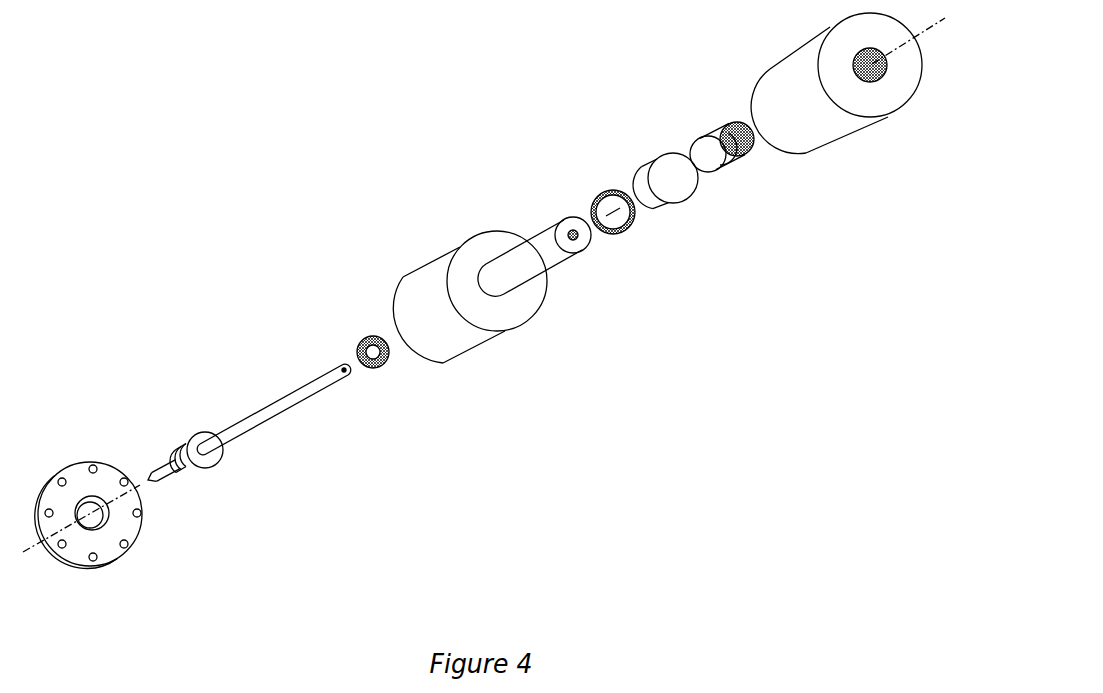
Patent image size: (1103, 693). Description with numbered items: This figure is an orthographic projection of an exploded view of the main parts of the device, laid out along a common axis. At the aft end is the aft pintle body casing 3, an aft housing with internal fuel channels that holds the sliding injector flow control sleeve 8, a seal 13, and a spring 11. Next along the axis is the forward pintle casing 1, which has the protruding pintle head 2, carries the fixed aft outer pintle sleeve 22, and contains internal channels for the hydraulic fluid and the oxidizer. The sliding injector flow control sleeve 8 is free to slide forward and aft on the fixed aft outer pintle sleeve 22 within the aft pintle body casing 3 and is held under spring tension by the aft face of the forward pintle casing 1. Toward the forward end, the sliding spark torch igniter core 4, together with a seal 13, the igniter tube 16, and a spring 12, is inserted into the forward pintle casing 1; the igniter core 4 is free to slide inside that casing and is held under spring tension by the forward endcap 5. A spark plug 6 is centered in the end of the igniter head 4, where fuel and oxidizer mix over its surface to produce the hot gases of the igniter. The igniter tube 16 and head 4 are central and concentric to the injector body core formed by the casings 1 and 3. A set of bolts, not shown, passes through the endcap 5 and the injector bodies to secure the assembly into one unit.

The forward pintle casing 1 is at (437, 270).
The pintle head 2 is at (590, 248).
The aft pintle body casing 3 is at (773, 92).
The sliding spark torch igniter core 4 is at (172, 453).
The forward endcap 5 is at (122, 530).
The spark plug 6 is at (153, 477).
The sliding injector flow control sleeve 8 is at (688, 175).
The spring 11 is at (630, 230).
The spring 12 is at (395, 353).
The seal 13 is at (642, 163).
The igniter tube 16 is at (302, 383).
The fixed aft outer pintle sleeve 22 is at (535, 280).